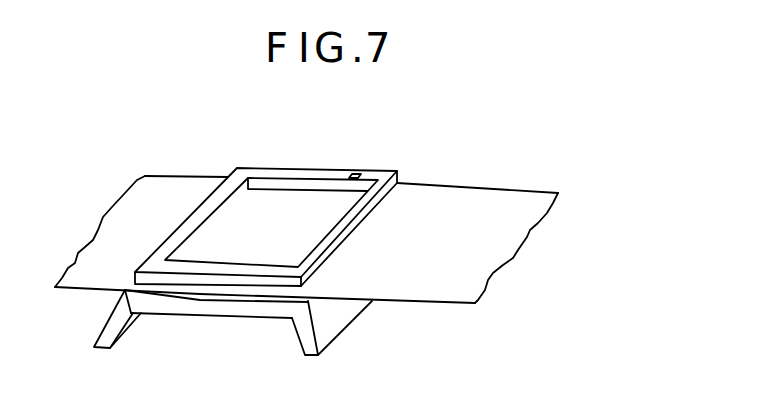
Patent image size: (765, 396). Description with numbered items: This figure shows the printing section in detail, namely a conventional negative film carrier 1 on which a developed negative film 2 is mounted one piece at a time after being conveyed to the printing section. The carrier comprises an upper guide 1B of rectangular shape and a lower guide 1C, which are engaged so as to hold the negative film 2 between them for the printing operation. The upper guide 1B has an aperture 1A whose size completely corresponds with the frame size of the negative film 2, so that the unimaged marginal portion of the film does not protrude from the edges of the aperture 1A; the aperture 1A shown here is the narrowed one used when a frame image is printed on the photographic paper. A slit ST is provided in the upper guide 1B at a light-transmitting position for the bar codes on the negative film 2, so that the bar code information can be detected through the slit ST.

The negative film carrier 1 is at (372, 250).
The aperture 1A is at (280, 208).
The upper guide 1B is at (266, 195).
The lower guide 1C is at (168, 318).
The negative film 2 is at (482, 200).
The slit ST is at (372, 141).